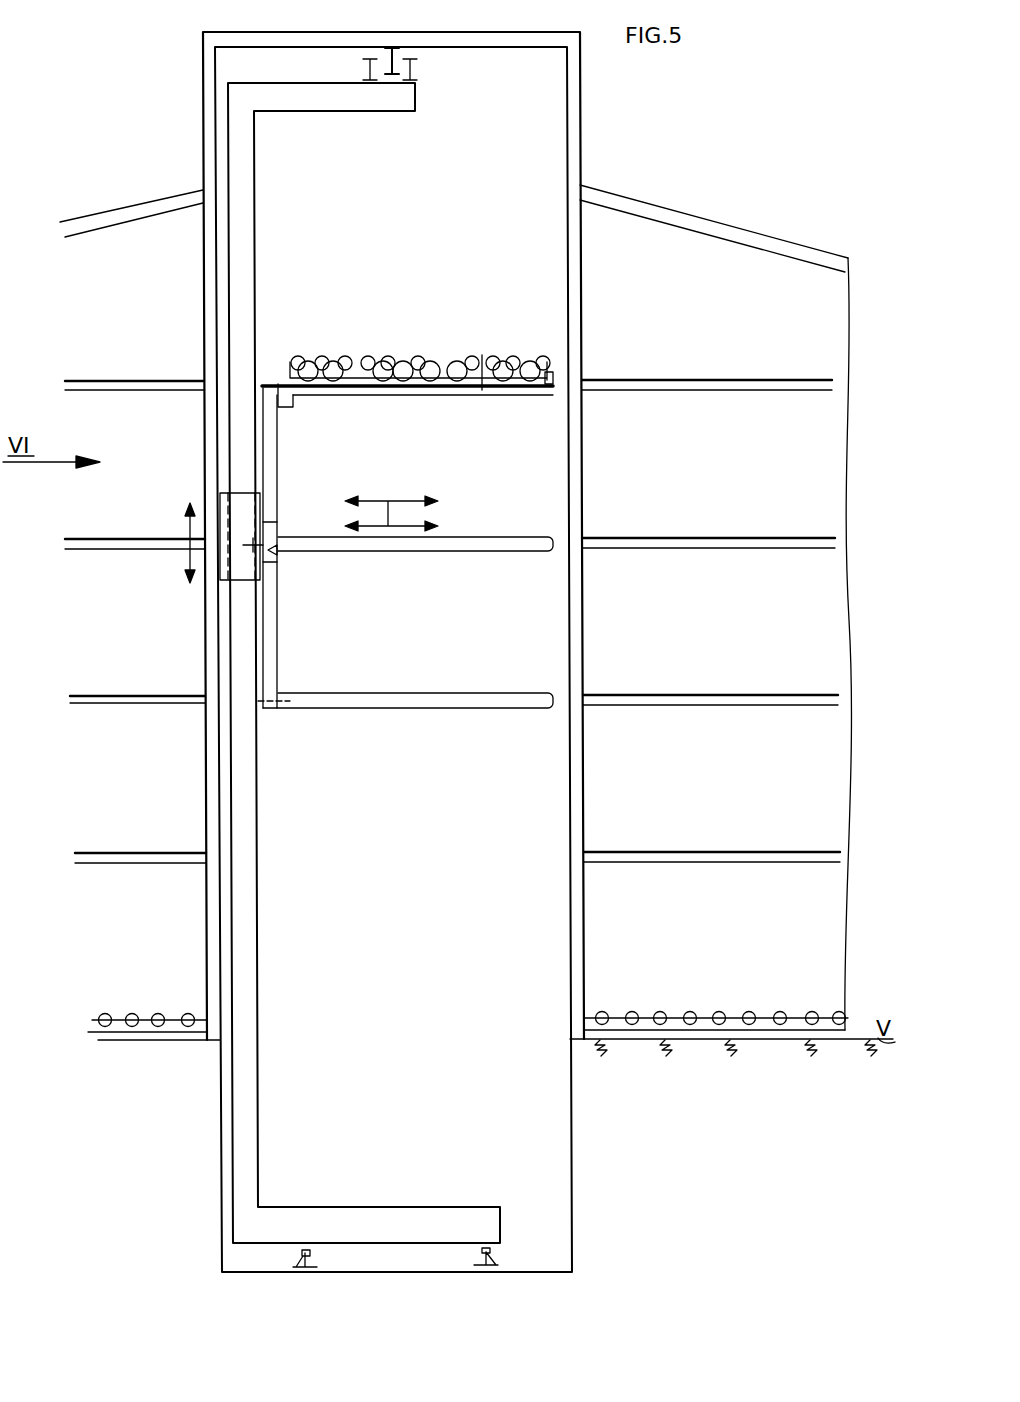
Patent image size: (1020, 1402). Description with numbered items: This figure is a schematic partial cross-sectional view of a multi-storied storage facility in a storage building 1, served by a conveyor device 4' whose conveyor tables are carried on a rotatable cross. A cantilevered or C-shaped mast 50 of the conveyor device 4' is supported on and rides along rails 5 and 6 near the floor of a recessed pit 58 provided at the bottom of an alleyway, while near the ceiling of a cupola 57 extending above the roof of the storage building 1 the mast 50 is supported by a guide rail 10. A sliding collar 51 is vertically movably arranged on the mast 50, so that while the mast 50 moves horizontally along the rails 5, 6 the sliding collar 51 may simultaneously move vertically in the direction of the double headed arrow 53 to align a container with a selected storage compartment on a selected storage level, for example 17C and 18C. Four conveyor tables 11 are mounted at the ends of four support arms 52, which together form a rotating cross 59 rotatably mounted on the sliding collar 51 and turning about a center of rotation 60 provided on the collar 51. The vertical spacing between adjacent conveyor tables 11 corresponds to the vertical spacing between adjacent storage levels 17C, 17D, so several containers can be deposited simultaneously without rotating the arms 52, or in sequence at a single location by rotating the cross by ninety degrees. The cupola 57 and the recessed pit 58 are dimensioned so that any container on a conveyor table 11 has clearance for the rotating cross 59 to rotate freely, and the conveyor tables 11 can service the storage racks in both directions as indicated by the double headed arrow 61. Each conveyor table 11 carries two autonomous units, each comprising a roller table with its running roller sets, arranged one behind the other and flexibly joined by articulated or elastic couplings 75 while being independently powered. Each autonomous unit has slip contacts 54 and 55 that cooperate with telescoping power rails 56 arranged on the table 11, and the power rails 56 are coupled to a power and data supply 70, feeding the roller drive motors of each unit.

The storage building 1 is at (783, 257).
The conveyor device 4' is at (740, 81).
The rail 5 is at (291, 1267).
The rail 6 is at (493, 1265).
The guide rail 10 is at (395, 60).
The conveyor table 11 is at (514, 701).
The storage level 17C is at (720, 536).
The storage level 17D is at (753, 379).
The storage level 18C is at (84, 546).
The mast 50 is at (249, 191).
The sliding collar 51 is at (232, 574).
The support arm 52 is at (275, 437).
The double headed arrow 53 is at (185, 556).
The slip contact 54 is at (527, 388).
The slip contact 55 is at (318, 388).
The telescoping power rail 56 is at (555, 389).
The cupola 57 is at (581, 83).
The recessed pit 58 is at (553, 1218).
The rotating cross 59 is at (273, 559).
The center of rotation 60 is at (270, 546).
The double headed arrow 61 is at (407, 498).
The power and data supply 70 is at (283, 384).
The coupling 75 is at (418, 365).